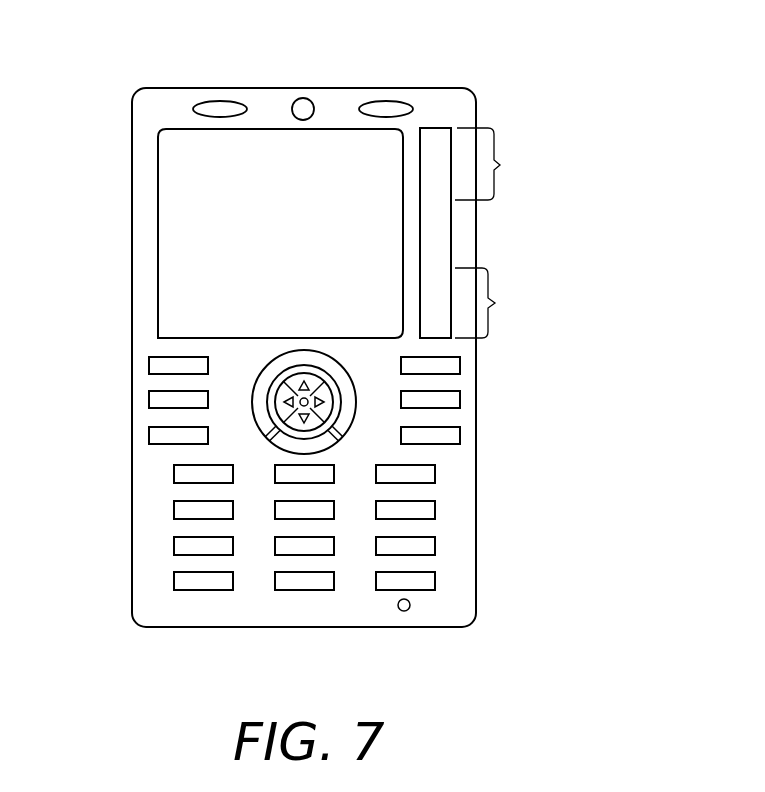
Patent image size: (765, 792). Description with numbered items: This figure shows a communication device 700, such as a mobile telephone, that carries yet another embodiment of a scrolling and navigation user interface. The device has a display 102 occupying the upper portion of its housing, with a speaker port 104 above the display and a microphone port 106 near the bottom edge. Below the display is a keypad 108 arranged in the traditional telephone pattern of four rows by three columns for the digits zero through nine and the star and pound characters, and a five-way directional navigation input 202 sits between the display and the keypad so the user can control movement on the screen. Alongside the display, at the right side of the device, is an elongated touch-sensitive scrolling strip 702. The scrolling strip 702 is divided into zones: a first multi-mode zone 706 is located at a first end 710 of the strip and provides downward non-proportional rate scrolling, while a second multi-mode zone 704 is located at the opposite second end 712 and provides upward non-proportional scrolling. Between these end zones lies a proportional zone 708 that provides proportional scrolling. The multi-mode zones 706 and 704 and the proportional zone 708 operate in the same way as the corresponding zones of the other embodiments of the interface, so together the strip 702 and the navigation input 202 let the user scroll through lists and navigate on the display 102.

The communication device 700 is at (373, 331).
The display 102 is at (188, 222).
The speaker port 104 is at (332, 100).
The microphone port 106 is at (404, 611).
The keypad 108 is at (614, 44).
The directional navigation input 202 is at (250, 374).
The scrolling strip 702 is at (442, 214).
The second multi-mode zone 704 is at (499, 164).
The first multi-mode zone 706 is at (496, 303).
The proportional zone 708 is at (420, 254).
The first end 710 is at (432, 340).
The second end 712 is at (435, 128).